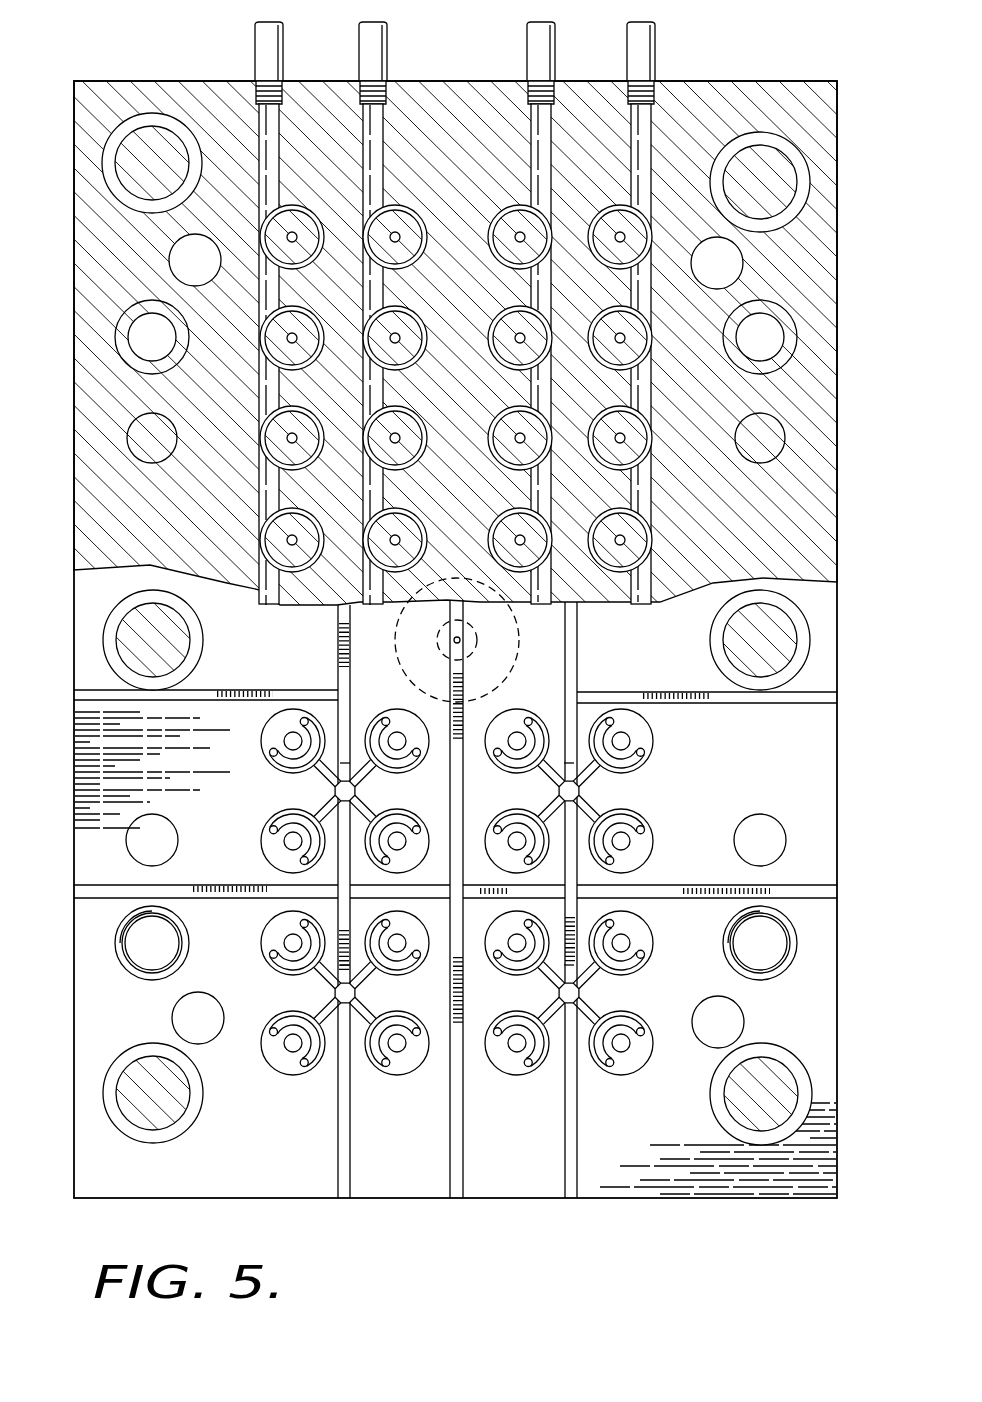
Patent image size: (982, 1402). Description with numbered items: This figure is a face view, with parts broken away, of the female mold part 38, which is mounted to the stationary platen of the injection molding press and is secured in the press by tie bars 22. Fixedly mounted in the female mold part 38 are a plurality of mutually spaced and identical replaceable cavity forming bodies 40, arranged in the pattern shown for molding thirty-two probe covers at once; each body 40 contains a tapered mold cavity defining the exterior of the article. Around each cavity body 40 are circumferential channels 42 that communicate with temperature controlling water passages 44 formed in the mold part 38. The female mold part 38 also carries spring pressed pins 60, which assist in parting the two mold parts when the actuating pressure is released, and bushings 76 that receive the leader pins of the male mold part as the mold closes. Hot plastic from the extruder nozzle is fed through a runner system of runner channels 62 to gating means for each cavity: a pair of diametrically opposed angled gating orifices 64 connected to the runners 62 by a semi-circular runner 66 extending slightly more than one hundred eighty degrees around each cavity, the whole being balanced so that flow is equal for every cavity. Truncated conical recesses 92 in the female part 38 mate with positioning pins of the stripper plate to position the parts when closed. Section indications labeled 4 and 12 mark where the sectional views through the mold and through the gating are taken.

The female mold part 38 is at (628, 1192).
The tie bars 22 is at (737, 1110).
The bushings 76 is at (745, 1125).
The temperature controlling water passages 44 is at (648, 503).
The circumferential channels 42 is at (537, 565).
The spring pressed pins 60 is at (773, 812).
The cavity forming bodies 40 is at (649, 942).
The semi-circular runner 66 is at (598, 1066).
The angled gating orifices 64 is at (608, 1066).
The runner channels 62 is at (462, 876).
The truncated conical recesses 92 is at (765, 980).
The section line 4- 4 is at (620, 403).
The section line 12- 12 is at (760, 725).